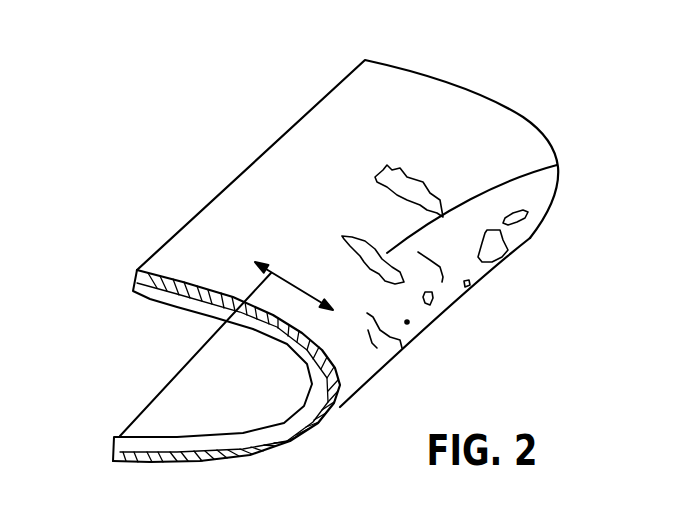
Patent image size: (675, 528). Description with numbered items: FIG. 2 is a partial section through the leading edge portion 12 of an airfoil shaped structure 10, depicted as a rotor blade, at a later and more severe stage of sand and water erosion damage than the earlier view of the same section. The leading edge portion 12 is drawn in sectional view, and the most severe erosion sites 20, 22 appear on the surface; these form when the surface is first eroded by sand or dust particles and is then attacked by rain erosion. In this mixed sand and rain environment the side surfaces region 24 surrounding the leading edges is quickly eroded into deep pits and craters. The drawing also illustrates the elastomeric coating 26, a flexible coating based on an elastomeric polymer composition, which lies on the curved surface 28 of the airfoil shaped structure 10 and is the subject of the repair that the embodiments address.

The airfoil shaped structure 10 is at (537, 264).
The leading edge portion 12 is at (359, 413).
The erosion site 20 is at (402, 183).
The erosion site 22 is at (560, 166).
The side surfaces region 24 is at (247, 300).
The elastomeric coating 26 is at (305, 438).
The curved surface 28 is at (160, 317).